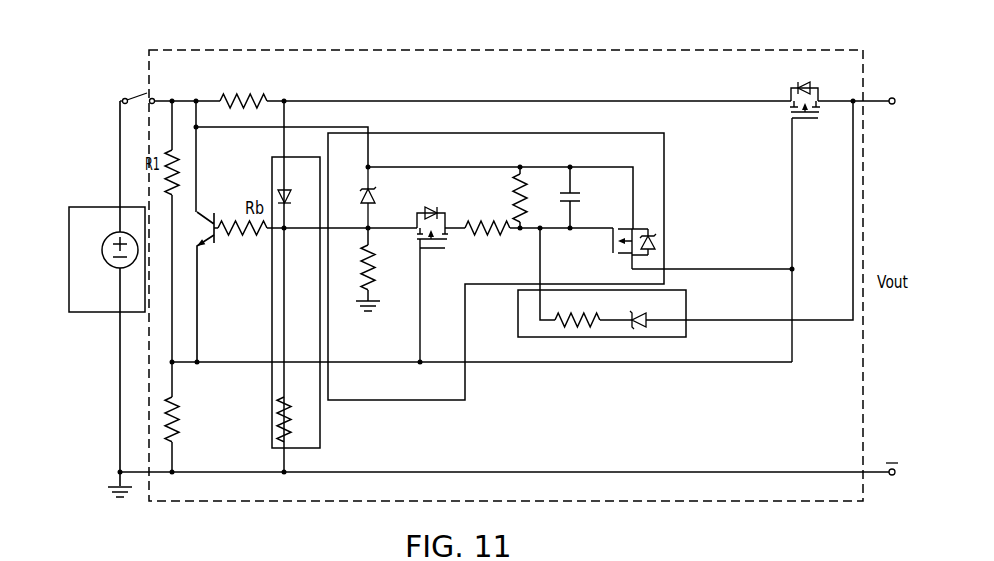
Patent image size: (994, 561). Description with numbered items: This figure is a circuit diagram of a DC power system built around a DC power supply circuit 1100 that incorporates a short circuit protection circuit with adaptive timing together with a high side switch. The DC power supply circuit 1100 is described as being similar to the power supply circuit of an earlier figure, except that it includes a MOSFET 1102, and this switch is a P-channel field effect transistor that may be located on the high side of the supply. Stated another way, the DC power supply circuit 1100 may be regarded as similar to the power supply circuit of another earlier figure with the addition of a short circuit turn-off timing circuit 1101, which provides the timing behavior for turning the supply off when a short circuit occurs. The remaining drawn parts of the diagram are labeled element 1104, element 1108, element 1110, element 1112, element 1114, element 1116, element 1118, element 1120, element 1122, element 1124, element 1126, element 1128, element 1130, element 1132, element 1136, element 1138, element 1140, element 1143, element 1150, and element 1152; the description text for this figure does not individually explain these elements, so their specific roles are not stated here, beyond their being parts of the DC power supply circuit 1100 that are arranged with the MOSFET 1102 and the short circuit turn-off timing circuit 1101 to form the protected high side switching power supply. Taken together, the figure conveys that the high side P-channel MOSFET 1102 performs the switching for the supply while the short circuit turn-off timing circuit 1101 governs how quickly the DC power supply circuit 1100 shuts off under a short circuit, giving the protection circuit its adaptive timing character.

The DC power supply circuit 1100 is at (100, 120).
The short circuit turn-off timing circuit 1101 is at (636, 340).
The MOSFET 1102 is at (865, 413).
The input voltage source 1104 is at (92, 315).
The supply line 1108 is at (540, 101).
The diode resistor network 1110 is at (272, 378).
The switch 1112 is at (170, 183).
The resistor R2 1114 is at (176, 440).
The transistor Q1 1116 is at (238, 212).
The sense resistor Rs 1118 is at (257, 96).
The emitter of transistor Q1 1120 is at (221, 245).
The P-channel MOSFET PMOS9 1122 is at (791, 92).
The resistor R3 1124 is at (296, 440).
The diode 1126 is at (290, 182).
The control circuit 1128 is at (664, 183).
The N-channel FET Q2 1130 is at (434, 204).
The P-channel FET Q3 1132 is at (656, 243).
The resistor R5 1136 is at (477, 232).
The resistor R6 1138 is at (523, 178).
The capacitor C1 1140 is at (576, 190).
The ground connection of resistor R4 1143 is at (356, 300).
The resistor R7 1150 is at (585, 337).
The zener diode Z2 1152 is at (650, 316).